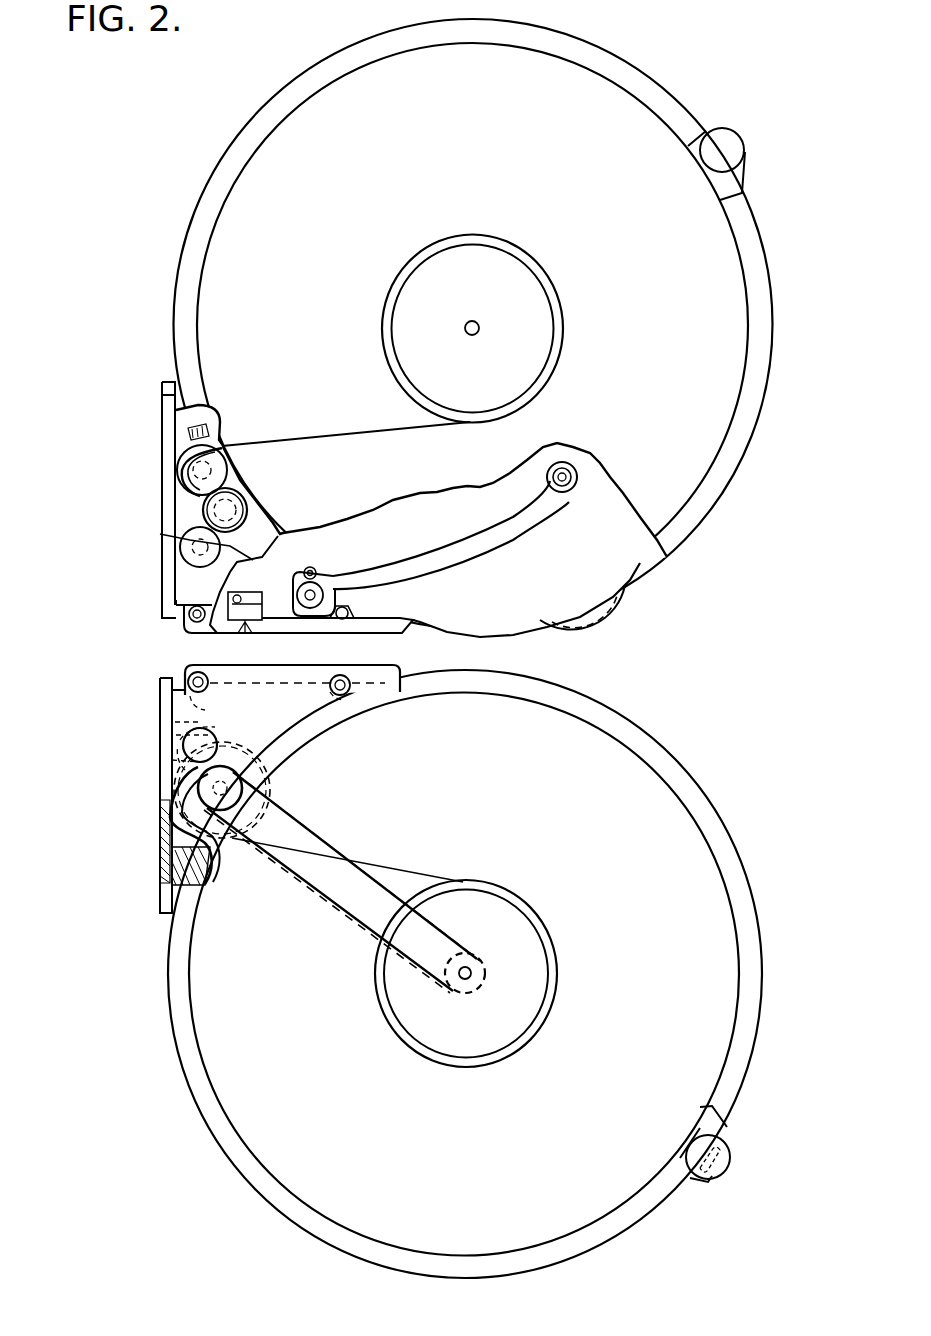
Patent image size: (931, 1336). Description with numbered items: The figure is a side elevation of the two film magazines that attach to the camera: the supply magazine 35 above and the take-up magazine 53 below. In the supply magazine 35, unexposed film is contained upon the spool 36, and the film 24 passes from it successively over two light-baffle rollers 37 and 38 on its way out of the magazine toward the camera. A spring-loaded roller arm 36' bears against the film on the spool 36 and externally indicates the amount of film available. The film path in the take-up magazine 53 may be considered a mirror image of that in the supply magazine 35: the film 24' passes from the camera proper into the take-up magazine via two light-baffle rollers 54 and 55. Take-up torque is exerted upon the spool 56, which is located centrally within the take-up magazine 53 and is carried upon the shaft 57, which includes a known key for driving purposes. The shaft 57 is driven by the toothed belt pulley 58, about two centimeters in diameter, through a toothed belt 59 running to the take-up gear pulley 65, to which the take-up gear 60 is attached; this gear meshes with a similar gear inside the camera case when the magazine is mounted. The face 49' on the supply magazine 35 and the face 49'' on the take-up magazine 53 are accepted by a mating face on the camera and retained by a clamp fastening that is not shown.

The film 24 is at (286, 499).
The film 24' is at (276, 799).
The supply magazine 35 is at (236, 154).
The spool 36 is at (472, 329).
The spring-loaded roller arm 36' is at (435, 539).
The light-baffle roller 37 is at (226, 468).
The light-baffle roller 38 is at (178, 540).
The face 49' is at (170, 450).
The face 49'' is at (156, 766).
The take-up magazine 53 is at (673, 1196).
The light-baffle roller 54 is at (208, 733).
The light-baffle roller 55 is at (210, 846).
The spool 56 is at (538, 1031).
The shaft 57 is at (465, 980).
The toothed belt pulley 58 is at (480, 970).
The toothed belt 59 is at (342, 882).
The take-up gear 60 is at (264, 788).
The take-up gear pulley 65 is at (256, 822).